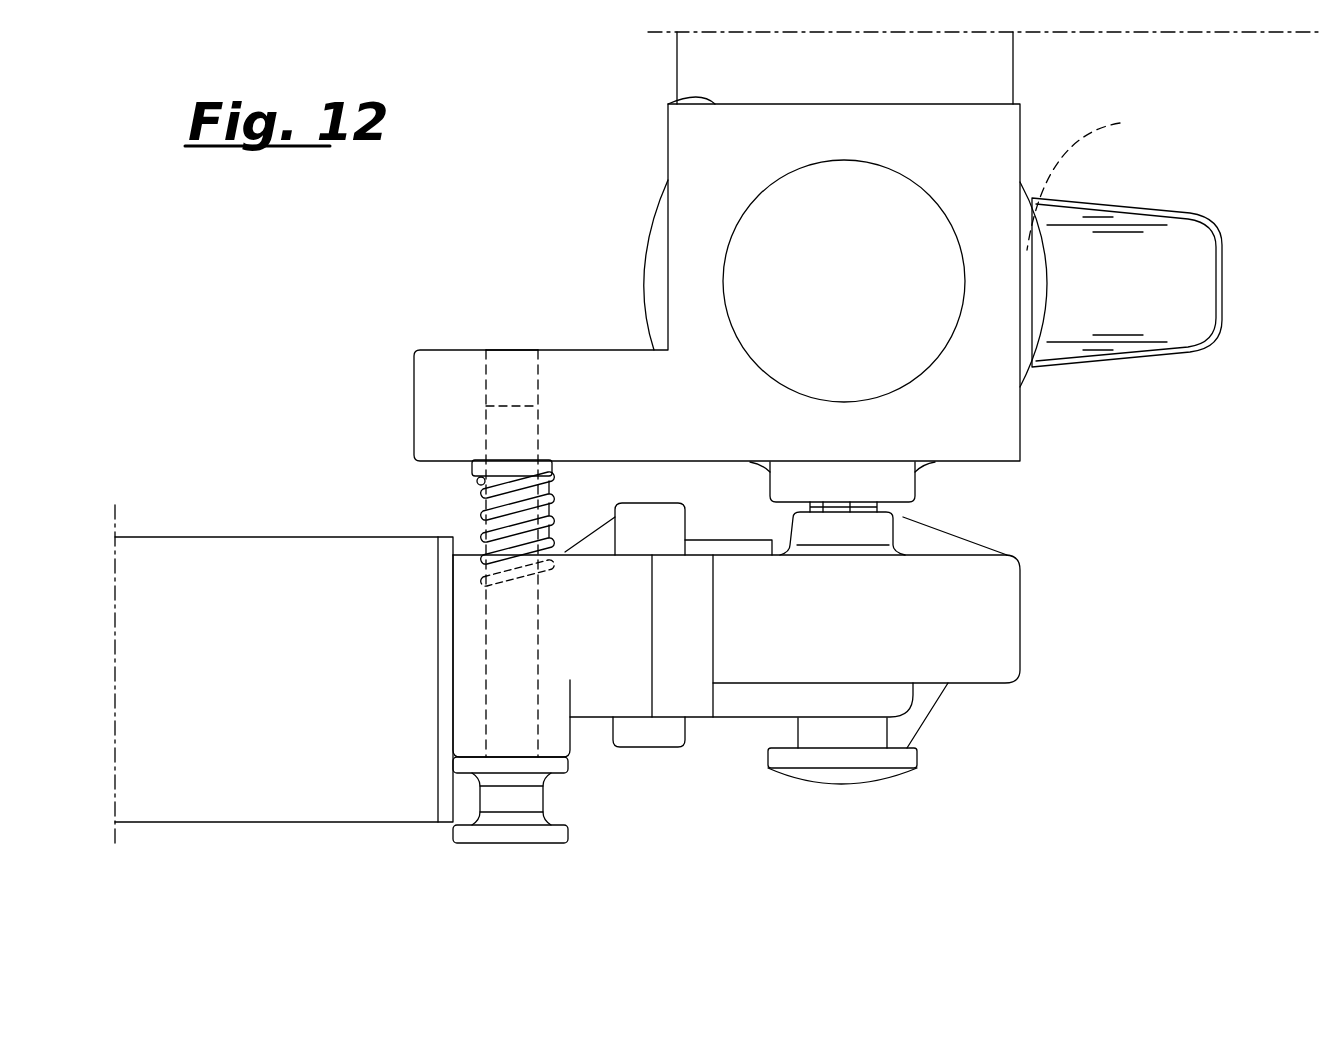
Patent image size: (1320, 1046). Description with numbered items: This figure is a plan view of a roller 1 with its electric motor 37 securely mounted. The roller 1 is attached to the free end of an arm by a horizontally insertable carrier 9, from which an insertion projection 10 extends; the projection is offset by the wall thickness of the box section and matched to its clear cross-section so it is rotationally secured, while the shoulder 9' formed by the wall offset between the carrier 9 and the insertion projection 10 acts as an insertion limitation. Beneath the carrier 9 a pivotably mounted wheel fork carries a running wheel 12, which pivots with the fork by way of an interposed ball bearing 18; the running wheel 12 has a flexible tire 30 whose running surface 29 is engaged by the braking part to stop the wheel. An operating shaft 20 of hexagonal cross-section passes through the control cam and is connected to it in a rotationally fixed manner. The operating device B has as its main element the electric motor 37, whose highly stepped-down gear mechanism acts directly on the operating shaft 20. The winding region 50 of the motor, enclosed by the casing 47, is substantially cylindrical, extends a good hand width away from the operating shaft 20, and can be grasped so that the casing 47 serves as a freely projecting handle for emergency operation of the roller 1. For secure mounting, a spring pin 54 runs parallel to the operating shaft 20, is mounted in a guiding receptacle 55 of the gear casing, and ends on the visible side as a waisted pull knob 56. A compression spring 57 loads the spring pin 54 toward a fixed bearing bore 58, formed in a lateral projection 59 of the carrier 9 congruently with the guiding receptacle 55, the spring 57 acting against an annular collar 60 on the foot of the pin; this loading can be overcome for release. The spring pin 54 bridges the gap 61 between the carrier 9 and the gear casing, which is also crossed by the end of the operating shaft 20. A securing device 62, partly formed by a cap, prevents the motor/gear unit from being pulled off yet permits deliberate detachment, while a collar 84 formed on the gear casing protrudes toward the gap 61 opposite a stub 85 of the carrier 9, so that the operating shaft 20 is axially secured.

The roller 1 is at (1140, 388).
The carrier 9 is at (771, 285).
The shoulder 9' is at (630, 77).
The insertion projection 10 is at (985, 74).
The running wheel 12 is at (1190, 217).
The ball bearing 18 is at (1092, 174).
The operating shaft 20 is at (892, 508).
The running surface 29 is at (1222, 283).
The flexible tire 30 is at (1178, 305).
The electric motor 37 is at (639, 785).
The casing 47 is at (300, 822).
The winding region 50 is at (270, 748).
The spring pin 54 is at (507, 428).
The guiding receptacle 55 is at (538, 722).
The waisted pull knob 56 is at (512, 835).
The spring 57 is at (477, 493).
The fixed bearing bore 58 is at (483, 372).
The lateral projection 59 is at (583, 383).
The annular collar 60 is at (560, 460).
The gap 61 is at (707, 490).
The securing device 62 is at (838, 777).
The collar 84 is at (838, 513).
The stub 85 is at (885, 482).
The operating device B is at (616, 247).